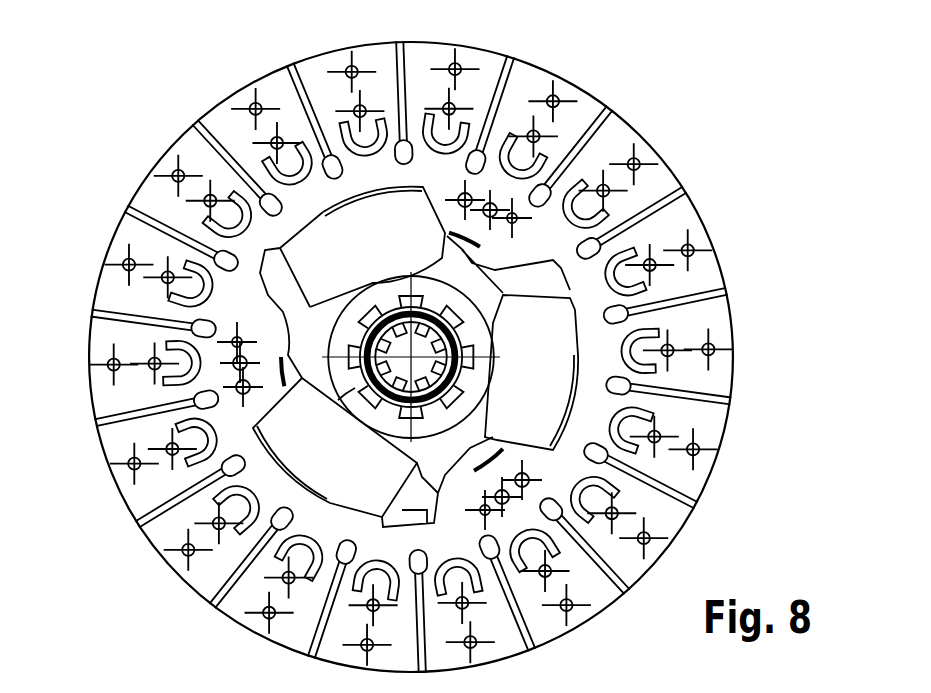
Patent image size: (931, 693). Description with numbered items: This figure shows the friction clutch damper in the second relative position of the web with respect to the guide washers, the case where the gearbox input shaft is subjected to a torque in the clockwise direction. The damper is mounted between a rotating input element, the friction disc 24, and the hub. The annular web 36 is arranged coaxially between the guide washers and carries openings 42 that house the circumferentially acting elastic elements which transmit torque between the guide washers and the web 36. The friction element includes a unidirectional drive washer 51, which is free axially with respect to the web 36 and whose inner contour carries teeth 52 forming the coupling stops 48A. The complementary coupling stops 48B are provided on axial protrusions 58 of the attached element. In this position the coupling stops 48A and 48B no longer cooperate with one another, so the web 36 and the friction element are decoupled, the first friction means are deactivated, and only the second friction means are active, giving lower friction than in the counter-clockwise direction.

The friction disc 24 is at (392, 357).
The annular web 36 is at (283, 295).
The openings 42 is at (312, 283).
The coupling stops 48A is at (348, 400).
The coupling stops 48B is at (368, 404).
The unidirectional drive washer 51 is at (197, 431).
The teeth 52 is at (457, 425).
The axial protrusions 58 is at (465, 415).